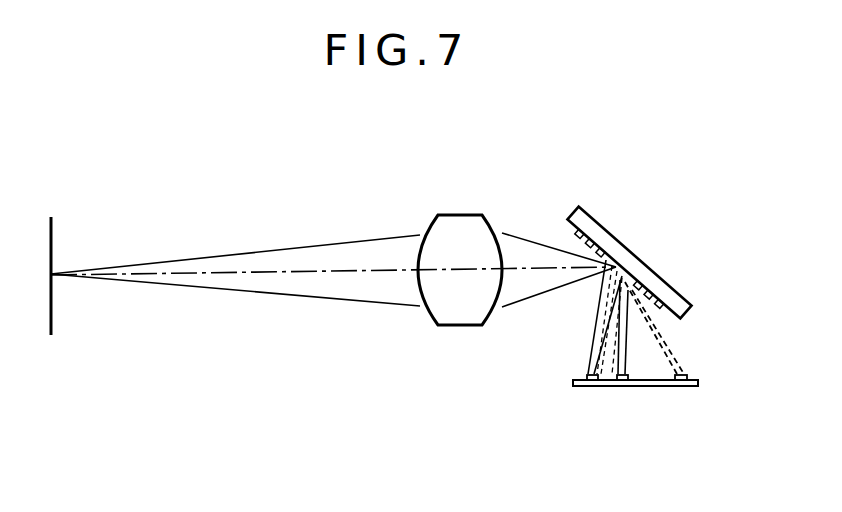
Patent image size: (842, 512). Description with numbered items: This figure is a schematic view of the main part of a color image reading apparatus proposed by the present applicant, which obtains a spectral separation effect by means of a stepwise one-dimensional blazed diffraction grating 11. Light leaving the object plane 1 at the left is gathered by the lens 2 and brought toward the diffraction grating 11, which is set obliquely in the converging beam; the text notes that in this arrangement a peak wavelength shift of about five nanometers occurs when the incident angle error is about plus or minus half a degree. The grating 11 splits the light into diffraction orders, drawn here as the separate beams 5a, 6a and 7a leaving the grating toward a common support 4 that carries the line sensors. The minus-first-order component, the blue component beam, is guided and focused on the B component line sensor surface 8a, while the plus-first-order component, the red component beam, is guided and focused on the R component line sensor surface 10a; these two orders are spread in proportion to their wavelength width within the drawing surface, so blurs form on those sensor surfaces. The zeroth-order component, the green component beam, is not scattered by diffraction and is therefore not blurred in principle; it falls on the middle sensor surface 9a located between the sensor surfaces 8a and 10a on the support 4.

The object / light source slit 1 is at (52, 247).
The lens 2 is at (461, 227).
The stepwise one-dimensional brazed diffraction grating 11 is at (600, 221).
The substrate 4 is at (698, 383).
The light beam 5a is at (596, 343).
The light beam 6a is at (625, 330).
The light beam 7a is at (670, 353).
The B component line sensor surface 8a is at (588, 388).
The photodetector 9a is at (622, 388).
The R component line sensor surface 10a is at (683, 388).